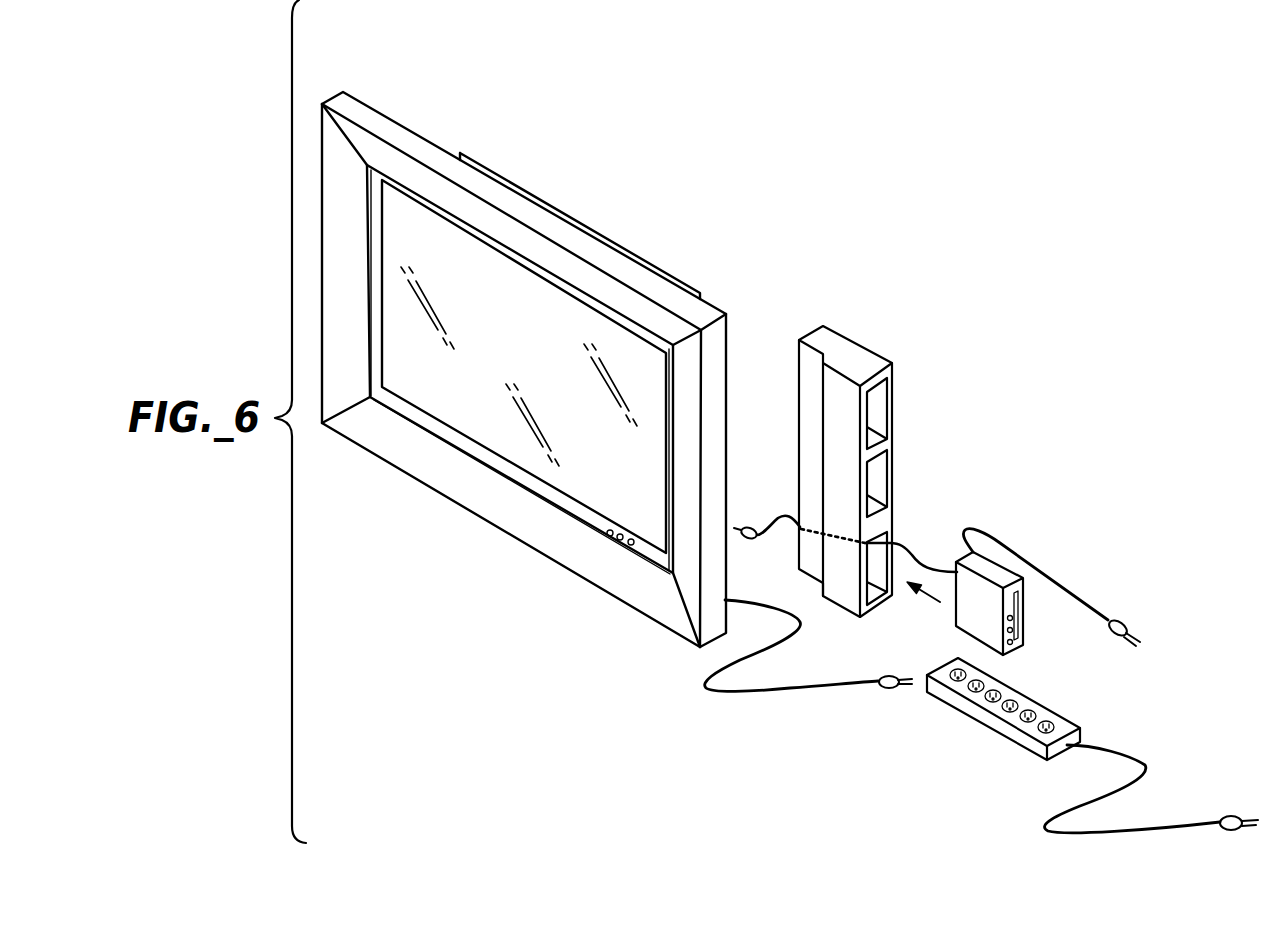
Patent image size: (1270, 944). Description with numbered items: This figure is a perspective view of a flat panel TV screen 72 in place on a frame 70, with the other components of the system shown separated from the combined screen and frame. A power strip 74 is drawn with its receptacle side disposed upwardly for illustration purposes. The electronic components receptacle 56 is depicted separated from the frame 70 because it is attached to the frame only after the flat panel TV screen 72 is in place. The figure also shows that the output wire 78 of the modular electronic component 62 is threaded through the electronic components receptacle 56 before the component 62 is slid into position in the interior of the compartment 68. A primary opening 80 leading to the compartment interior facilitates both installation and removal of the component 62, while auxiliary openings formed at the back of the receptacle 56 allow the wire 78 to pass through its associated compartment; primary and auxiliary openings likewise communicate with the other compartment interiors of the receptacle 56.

The frame 70 is at (507, 513).
The flat panel TV screen 72 is at (572, 310).
The electronic components receptacle 56 is at (860, 479).
The compartment 68 is at (887, 600).
The primary opening 80 is at (894, 531).
The output wire 78 is at (927, 567).
The modular electronic component 62 is at (970, 613).
The power strip 74 is at (1027, 710).